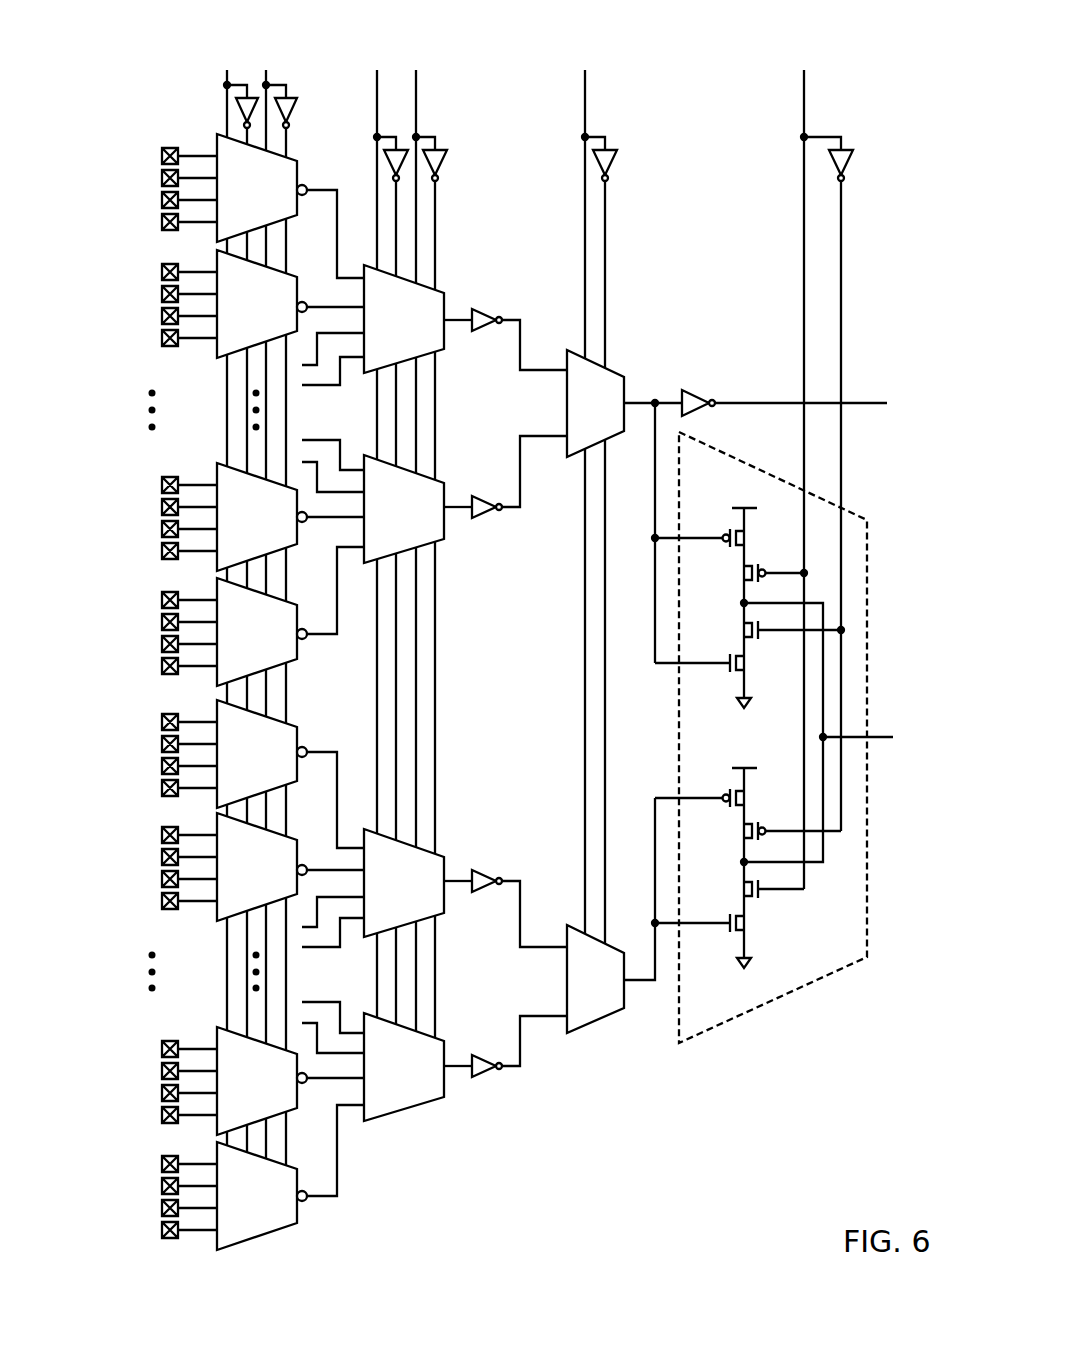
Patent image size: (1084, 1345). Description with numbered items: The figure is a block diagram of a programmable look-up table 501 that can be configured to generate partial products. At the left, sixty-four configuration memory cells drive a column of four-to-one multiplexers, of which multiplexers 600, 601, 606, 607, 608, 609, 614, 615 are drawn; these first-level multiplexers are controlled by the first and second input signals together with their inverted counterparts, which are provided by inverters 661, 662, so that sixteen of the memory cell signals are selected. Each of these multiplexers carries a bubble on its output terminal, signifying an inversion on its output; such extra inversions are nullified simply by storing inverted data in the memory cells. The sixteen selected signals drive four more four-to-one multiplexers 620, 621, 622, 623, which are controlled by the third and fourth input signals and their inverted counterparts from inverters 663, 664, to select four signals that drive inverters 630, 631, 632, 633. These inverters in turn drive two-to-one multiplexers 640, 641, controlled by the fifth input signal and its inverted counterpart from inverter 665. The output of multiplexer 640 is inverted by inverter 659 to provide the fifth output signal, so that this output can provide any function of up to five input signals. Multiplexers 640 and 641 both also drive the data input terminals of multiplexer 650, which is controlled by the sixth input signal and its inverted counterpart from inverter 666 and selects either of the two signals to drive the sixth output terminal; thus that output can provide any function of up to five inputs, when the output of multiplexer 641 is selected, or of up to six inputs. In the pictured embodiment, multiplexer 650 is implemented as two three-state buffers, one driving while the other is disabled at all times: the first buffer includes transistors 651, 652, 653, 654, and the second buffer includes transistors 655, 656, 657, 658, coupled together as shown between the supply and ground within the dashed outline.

The programmable look-up table 501 is at (111, 60).
The 4-to-1 multiplexer 600 is at (238, 201).
The 4-to-1 multiplexer 601 is at (238, 317).
The 4-to-1 multiplexer 606 is at (238, 530).
The 4-to-1 multiplexer 607 is at (238, 645).
The 4-to-1 multiplexer 608 is at (238, 767).
The 4-to-1 multiplexer 609 is at (238, 880).
The 4-to-1 multiplexer 614 is at (238, 1094).
The 4-to-1 multiplexer 615 is at (238, 1209).
The 4-to-1 multiplexer 620 is at (387, 332).
The 4-to-1 multiplexer 621 is at (387, 522).
The 4-to-1 multiplexer 622 is at (387, 896).
The 4-to-1 multiplexer 623 is at (387, 1080).
The inverter 630 is at (488, 308).
The inverter 631 is at (488, 519).
The inverter 632 is at (488, 869).
The inverter 633 is at (488, 1078).
The 2-to-1 multiplexer 640 is at (578, 414).
The 2-to-1 multiplexer 641 is at (578, 991).
The multiplexer 650 is at (670, 750).
The transistor 651 is at (746, 541).
The transistor 652 is at (746, 574).
The transistor 653 is at (746, 631).
The transistor 654 is at (746, 666).
The transistor 655 is at (746, 801).
The transistor 656 is at (746, 832).
The transistor 657 is at (746, 890).
The transistor 658 is at (746, 926).
The inverter 659 is at (701, 392).
The inverter 661 is at (236, 111).
The inverter 662 is at (297, 111).
The inverter 663 is at (386, 163).
The inverter 664 is at (446, 163).
The inverter 665 is at (613, 163).
The inverter 666 is at (849, 163).